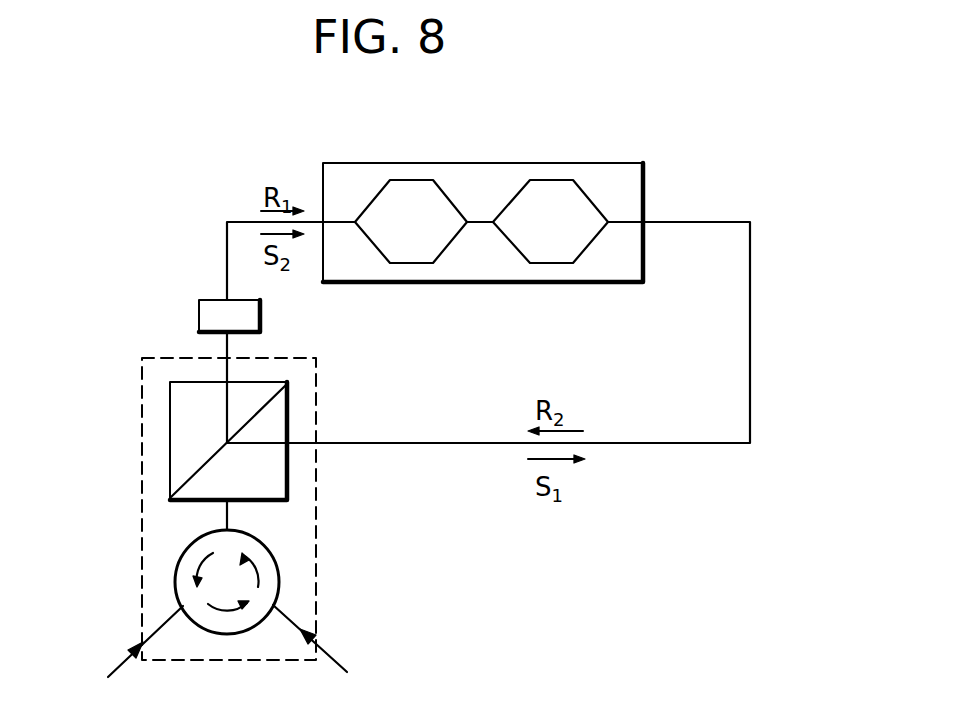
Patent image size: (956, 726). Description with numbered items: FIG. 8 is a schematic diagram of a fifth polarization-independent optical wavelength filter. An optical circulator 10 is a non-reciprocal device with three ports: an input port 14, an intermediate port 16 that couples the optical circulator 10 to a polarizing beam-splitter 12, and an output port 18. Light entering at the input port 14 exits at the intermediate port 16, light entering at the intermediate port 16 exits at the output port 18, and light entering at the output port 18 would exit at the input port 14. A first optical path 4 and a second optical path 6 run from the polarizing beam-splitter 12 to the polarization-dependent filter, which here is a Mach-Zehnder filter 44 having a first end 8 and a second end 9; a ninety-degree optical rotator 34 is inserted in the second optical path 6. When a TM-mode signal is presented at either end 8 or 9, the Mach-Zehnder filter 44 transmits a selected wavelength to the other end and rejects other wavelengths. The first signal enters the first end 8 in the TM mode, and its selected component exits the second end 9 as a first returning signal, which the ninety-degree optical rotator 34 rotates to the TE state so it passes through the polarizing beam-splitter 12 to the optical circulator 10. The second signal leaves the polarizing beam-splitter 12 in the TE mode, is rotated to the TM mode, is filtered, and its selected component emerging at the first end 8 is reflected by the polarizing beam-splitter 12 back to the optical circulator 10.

The first optical path 4 is at (750, 263).
The second optical path 6 is at (227, 245).
The first end 8 is at (643, 188).
The second end 9 is at (323, 182).
The optical circulator 10 is at (280, 580).
The polarizing beam-splitter 12 is at (287, 396).
The input port 14 is at (337, 662).
The intermediate port 16 is at (227, 513).
The output port 18 is at (128, 656).
The ninety-degree optical rotator 34 is at (199, 312).
The Mach-Zehnder filter 44 is at (612, 163).